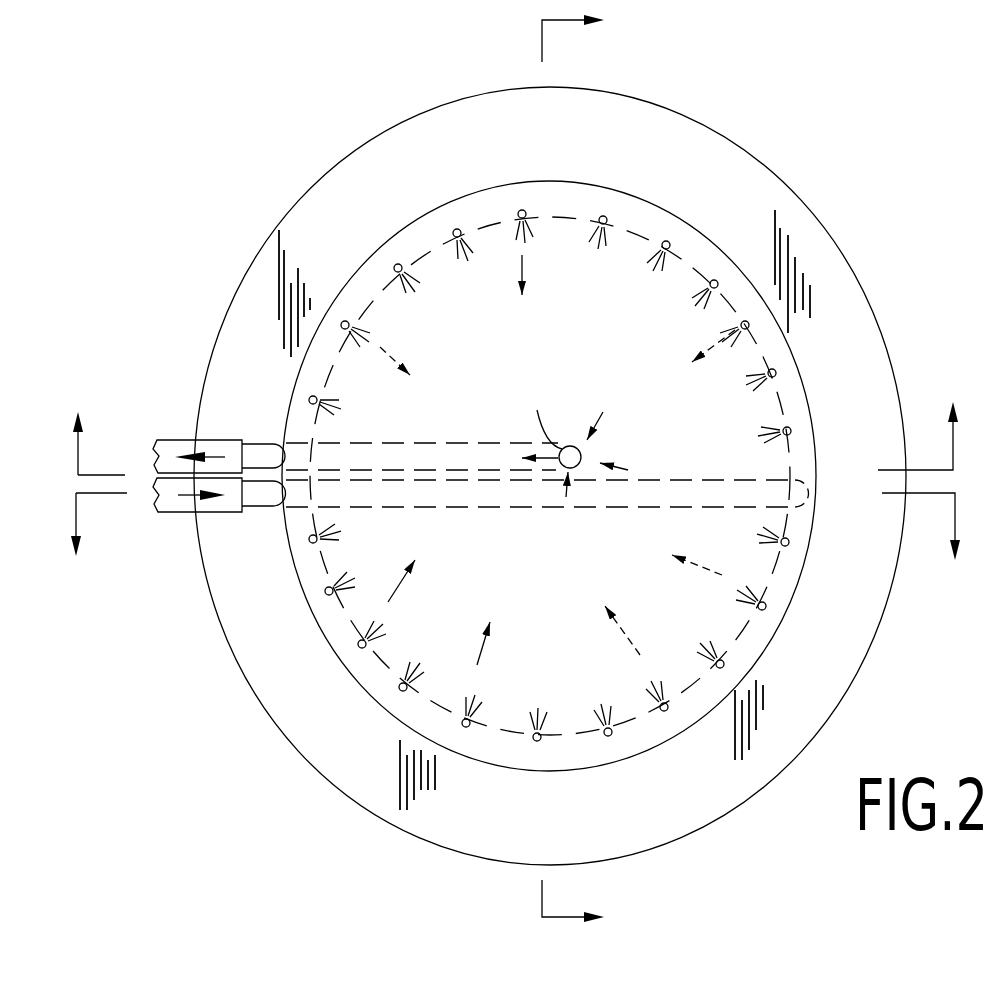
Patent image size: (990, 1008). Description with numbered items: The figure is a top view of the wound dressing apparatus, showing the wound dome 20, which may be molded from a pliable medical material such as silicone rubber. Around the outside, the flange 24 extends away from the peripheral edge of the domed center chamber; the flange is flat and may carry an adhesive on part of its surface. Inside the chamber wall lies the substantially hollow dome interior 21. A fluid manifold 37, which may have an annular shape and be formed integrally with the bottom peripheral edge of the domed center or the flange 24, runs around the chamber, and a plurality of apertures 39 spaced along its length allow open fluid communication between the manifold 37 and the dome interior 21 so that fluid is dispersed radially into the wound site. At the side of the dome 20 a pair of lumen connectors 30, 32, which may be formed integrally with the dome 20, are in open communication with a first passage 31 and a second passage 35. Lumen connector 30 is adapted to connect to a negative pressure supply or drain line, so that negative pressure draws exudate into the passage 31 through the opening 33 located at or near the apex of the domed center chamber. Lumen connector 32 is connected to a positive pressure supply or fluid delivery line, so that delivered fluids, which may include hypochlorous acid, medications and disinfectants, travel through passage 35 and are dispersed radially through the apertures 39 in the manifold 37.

The wound dome 20 is at (196, 126).
The flange 24 is at (403, 153).
The dome interior 21 is at (584, 373).
The fluid manifold 37 is at (635, 210).
The apertures 39 is at (478, 308).
The lumen connector 30 is at (268, 456).
The lumen connector 32 is at (263, 498).
The first passage 31 is at (468, 440).
The second passage 35 is at (640, 498).
The opening 33 is at (592, 447).